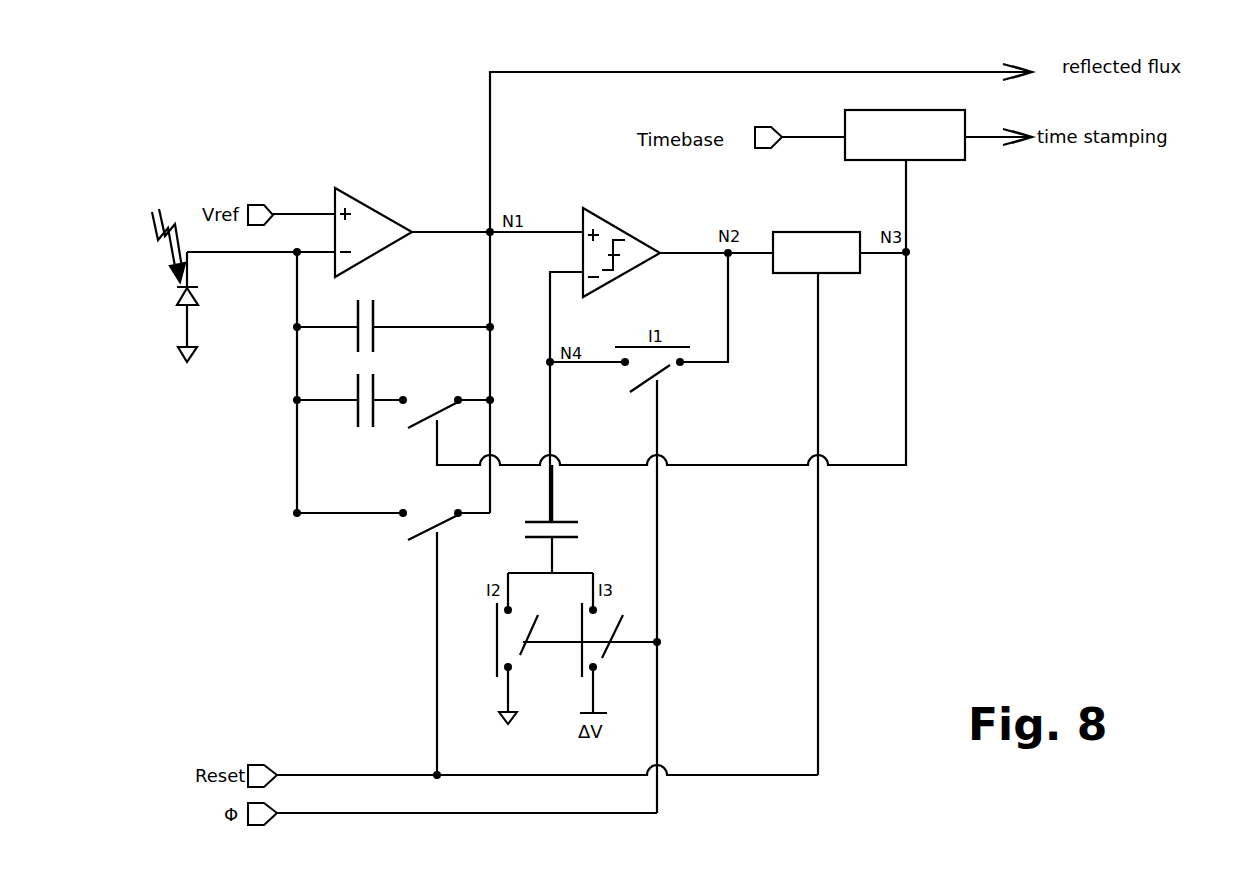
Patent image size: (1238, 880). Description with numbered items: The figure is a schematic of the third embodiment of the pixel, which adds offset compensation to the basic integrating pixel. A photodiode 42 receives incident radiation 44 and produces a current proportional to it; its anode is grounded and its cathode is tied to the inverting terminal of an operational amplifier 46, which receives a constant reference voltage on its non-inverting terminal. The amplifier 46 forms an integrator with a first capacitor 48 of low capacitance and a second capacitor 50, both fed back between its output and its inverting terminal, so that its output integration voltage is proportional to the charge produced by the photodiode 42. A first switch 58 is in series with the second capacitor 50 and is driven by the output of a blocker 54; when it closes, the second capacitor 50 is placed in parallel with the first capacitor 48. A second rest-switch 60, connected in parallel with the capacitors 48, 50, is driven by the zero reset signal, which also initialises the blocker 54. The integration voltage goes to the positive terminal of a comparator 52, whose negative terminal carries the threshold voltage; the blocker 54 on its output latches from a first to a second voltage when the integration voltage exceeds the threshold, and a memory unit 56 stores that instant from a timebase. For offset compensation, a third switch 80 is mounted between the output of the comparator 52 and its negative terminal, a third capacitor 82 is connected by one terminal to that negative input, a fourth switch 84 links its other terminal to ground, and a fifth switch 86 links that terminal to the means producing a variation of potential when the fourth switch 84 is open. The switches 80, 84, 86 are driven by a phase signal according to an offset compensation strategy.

The photodiode 42 is at (197, 298).
The incident radiation 44 is at (148, 192).
The operational amplifier 46 is at (362, 190).
The first capacitor 48 is at (380, 313).
The second capacitor 50 is at (375, 388).
The comparator 52 is at (637, 238).
The blocker 54 is at (843, 274).
The memory unit 56 is at (945, 162).
The first switch 58 is at (417, 428).
The second rest-switch 60 is at (417, 542).
The third switch 80 is at (670, 373).
The third capacitor 82 is at (562, 522).
The fourth switch 84 is at (523, 652).
The fifth switch 86 is at (607, 650).